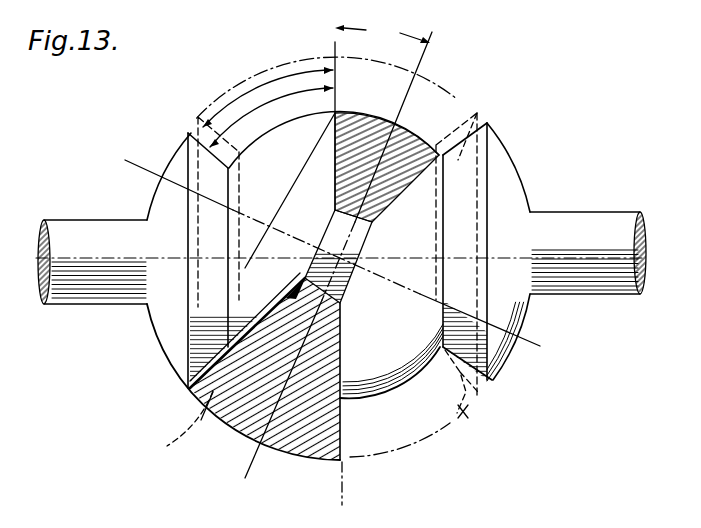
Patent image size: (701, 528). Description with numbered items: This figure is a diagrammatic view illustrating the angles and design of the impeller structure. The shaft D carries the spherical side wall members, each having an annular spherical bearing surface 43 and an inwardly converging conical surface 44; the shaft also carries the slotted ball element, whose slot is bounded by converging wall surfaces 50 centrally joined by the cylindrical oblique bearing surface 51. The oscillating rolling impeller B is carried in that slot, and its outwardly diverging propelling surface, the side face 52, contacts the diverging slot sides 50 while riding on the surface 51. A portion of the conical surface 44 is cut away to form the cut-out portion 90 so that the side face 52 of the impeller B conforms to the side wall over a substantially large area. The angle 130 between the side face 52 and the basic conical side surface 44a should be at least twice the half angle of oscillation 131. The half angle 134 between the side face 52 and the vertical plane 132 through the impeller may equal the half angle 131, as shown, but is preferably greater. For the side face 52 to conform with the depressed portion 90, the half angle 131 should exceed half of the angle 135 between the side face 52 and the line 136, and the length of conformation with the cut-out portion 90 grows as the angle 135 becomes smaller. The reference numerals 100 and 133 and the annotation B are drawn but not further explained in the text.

The annular spherical shaped bearing surface 43 is at (507, 193).
The inwardly converging conical surface 44 is at (440, 143).
The basic conical side surface 44a is at (205, 177).
The converging wall surface of the slot 50 is at (273, 276).
The cylindrical central oblique bearing surface 51 is at (338, 227).
The outwardly diverging propelling surface 52 is at (345, 424).
The cut-out portion 90 is at (483, 117).
The cut plane 100 is at (360, 252).
The angle 130 is at (271, 116).
The half angle of oscillation 131 is at (382, 32).
The vertical plane 132 is at (245, 478).
The vertical axis 133 is at (348, 494).
The half angle 134 is at (378, 153).
The angle 135 is at (268, 97).
The line 136 is at (222, 115).
The shaft D is at (97, 233).
The oscillating rolling impeller B is at (247, 347).